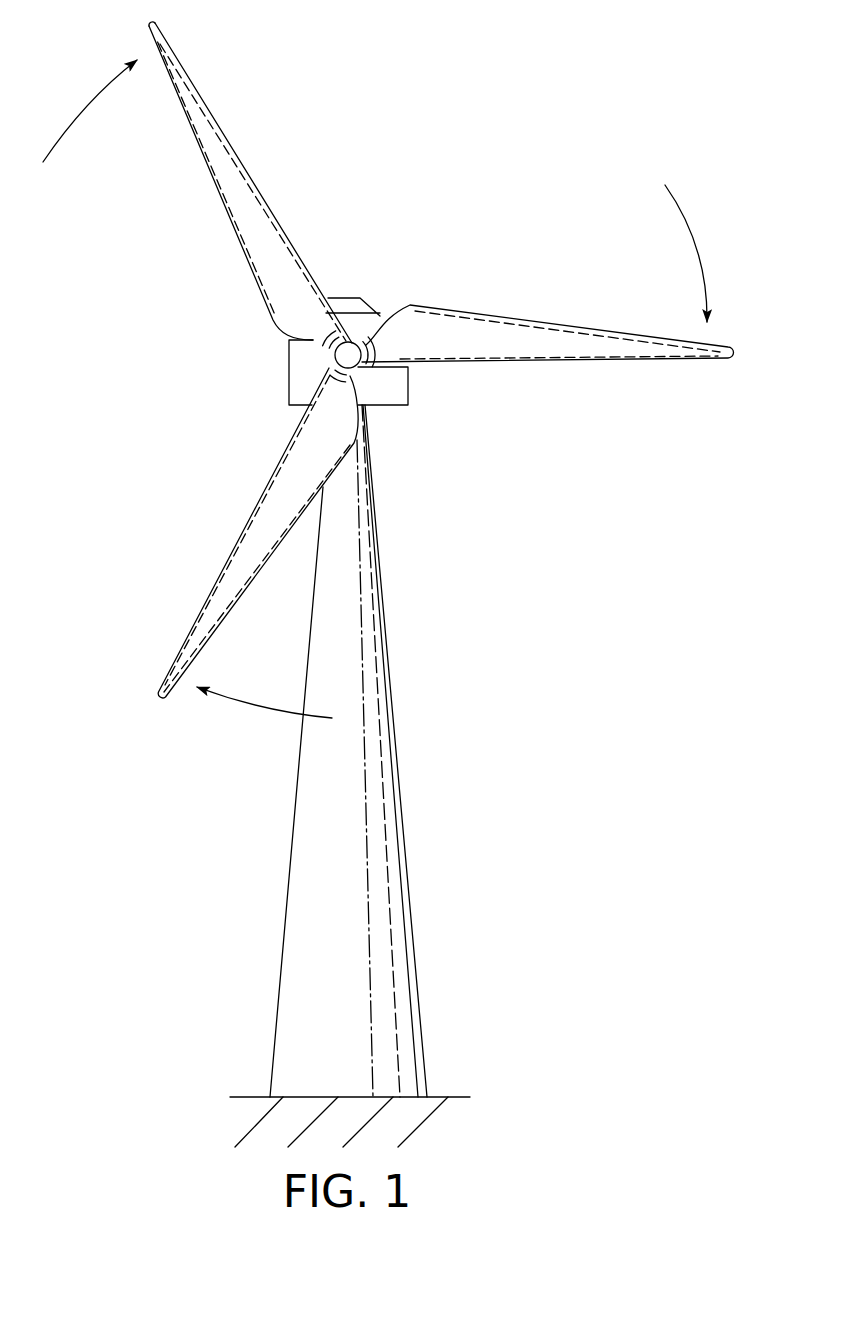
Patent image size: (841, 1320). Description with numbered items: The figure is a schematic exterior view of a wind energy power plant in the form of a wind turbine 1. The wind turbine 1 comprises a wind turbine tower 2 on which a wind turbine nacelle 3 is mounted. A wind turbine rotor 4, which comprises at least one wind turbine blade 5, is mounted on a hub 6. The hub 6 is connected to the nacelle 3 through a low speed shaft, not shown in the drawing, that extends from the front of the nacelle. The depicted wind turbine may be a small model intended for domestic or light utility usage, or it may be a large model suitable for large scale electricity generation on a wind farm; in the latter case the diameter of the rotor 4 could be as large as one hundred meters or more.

The wind turbine 1 is at (388, 559).
The wind turbine tower 2 is at (400, 777).
The wind turbine nacelle 3 is at (398, 387).
The wind turbine rotor 4 is at (388, 370).
The wind turbine blade 5 is at (638, 342).
The hub 6 is at (352, 347).